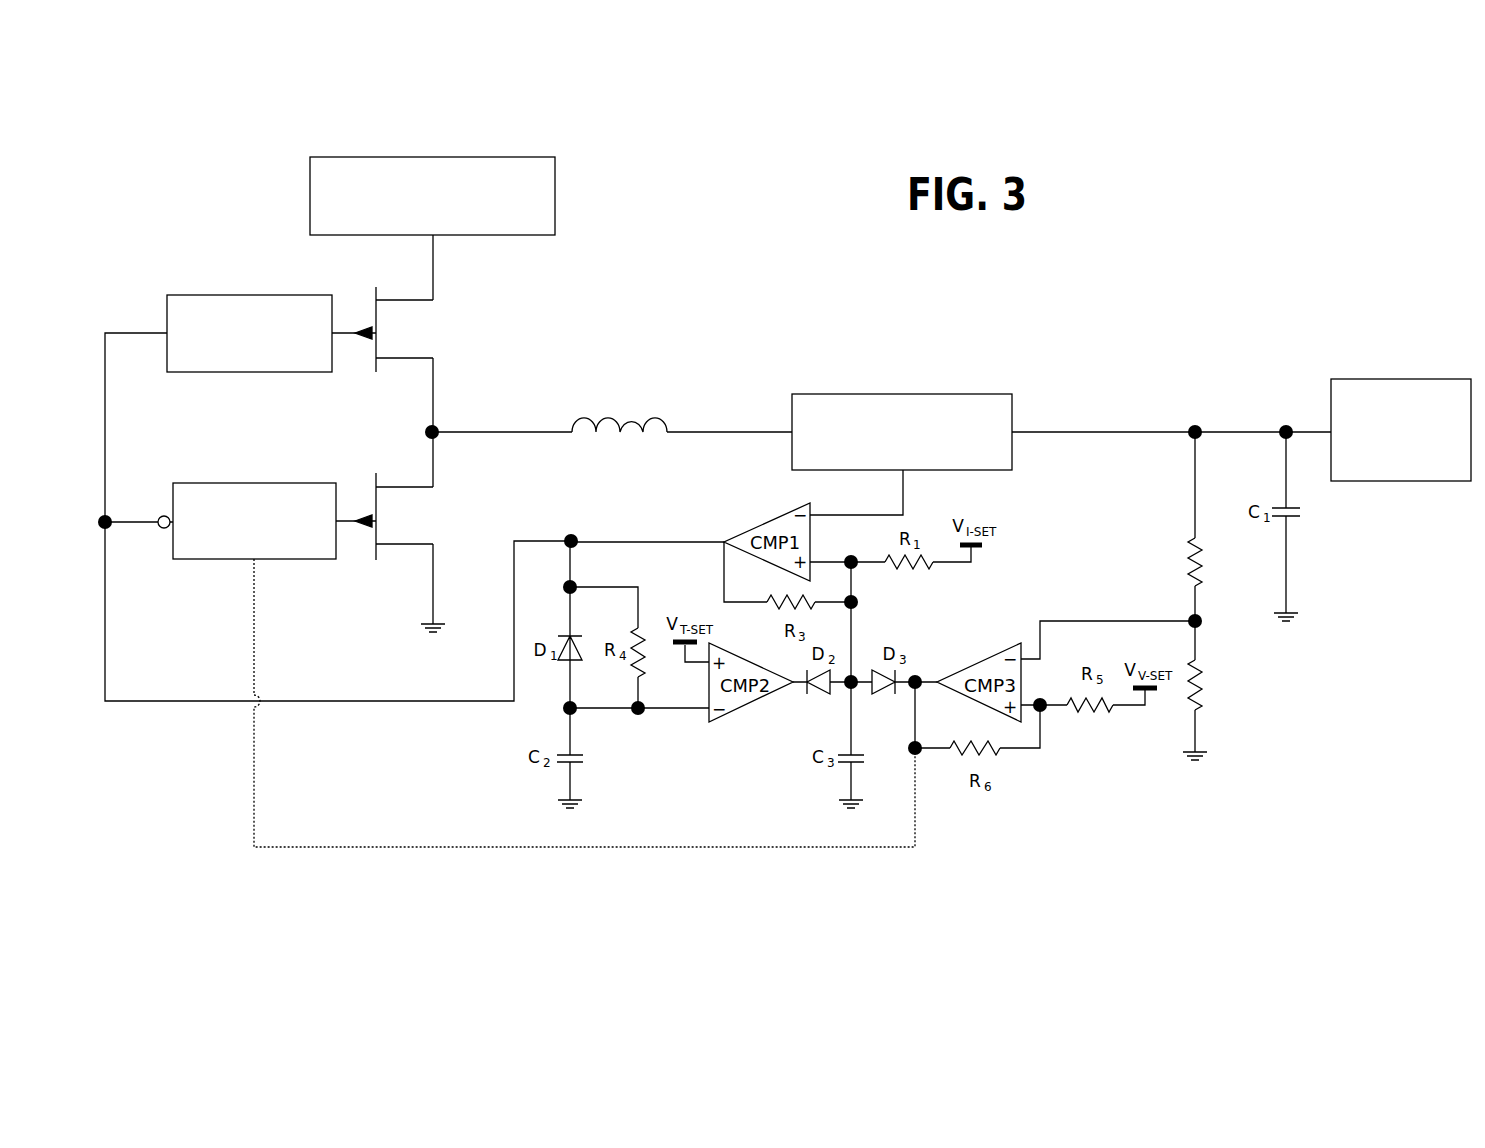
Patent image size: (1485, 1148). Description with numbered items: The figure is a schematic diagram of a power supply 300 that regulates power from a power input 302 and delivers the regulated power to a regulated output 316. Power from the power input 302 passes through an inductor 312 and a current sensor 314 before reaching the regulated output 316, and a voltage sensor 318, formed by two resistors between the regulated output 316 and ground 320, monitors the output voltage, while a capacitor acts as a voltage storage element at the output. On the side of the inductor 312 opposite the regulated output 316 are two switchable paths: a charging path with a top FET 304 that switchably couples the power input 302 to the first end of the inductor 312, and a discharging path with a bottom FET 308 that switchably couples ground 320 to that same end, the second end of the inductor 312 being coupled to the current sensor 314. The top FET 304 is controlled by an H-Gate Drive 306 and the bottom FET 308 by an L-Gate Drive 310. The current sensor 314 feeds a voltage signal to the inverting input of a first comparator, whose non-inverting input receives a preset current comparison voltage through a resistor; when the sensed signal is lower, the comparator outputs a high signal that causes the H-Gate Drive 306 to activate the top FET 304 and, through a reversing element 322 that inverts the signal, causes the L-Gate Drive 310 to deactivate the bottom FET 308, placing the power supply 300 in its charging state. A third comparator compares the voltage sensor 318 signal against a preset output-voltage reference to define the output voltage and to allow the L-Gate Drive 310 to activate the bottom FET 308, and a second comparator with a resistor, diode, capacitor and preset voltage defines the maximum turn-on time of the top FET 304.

The power supply 300 is at (1312, 218).
The power input 302 is at (432, 228).
The top FET 304 is at (520, 306).
The H-Gate Drive 306 is at (338, 498).
The bottom FET 308 is at (548, 493).
The L-Gate Drive 310 is at (544, 665).
The inductor 312 is at (675, 393).
The current sensor 314 is at (902, 454).
The regulated output 316 is at (1401, 430).
The voltage sensor 318 is at (1122, 556).
The ground 320 is at (420, 633).
The reversing element 322 is at (161, 512).